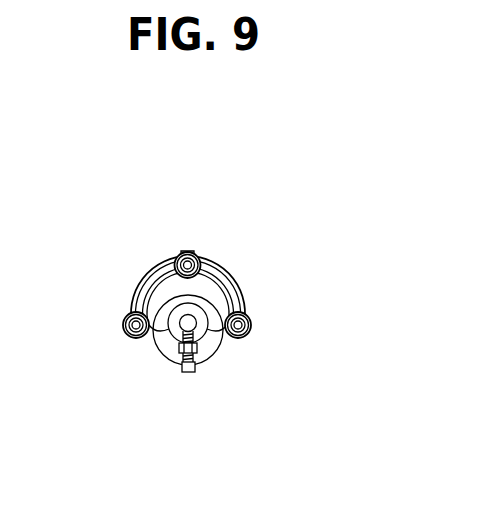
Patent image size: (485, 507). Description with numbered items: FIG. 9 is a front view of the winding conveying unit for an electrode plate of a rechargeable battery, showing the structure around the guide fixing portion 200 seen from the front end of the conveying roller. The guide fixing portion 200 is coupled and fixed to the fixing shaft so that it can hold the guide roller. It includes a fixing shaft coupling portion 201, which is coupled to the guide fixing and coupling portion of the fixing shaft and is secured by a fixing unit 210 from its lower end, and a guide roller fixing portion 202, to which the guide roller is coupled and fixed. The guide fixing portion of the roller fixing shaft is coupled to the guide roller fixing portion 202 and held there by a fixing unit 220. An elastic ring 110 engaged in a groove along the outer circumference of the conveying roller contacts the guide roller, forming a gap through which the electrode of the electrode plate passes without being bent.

The guide fixing portion 200 is at (157, 259).
The guide roller fixing portion 202 is at (202, 260).
The elastic ring 110 is at (237, 277).
The fixing unit 220 is at (131, 346).
The fixing shaft coupling portion 201 is at (161, 344).
The fixing unit 210 is at (187, 374).